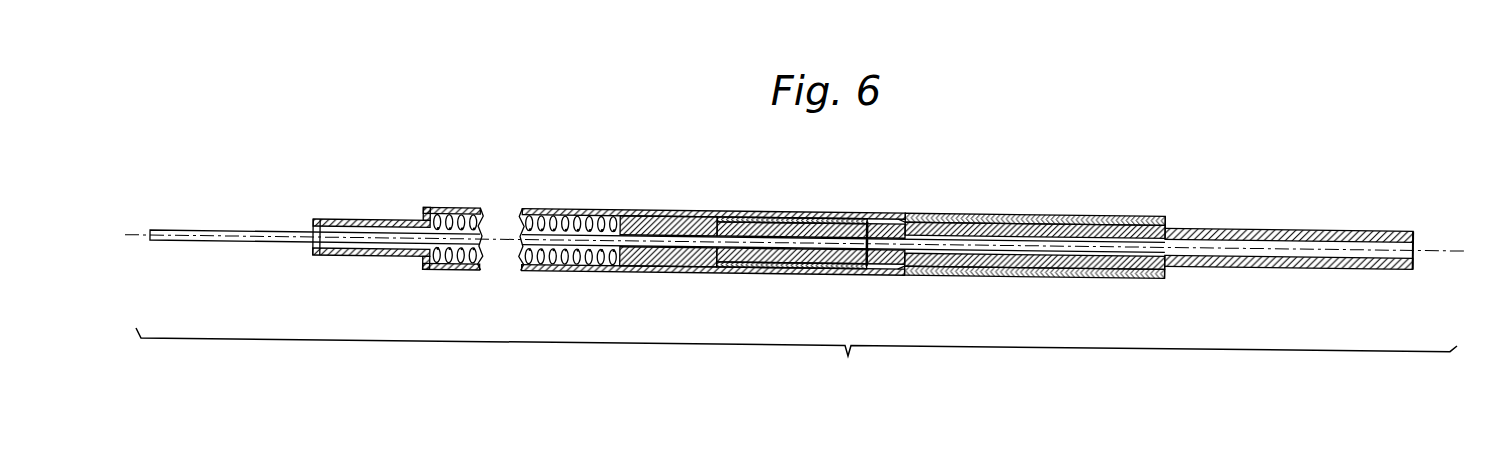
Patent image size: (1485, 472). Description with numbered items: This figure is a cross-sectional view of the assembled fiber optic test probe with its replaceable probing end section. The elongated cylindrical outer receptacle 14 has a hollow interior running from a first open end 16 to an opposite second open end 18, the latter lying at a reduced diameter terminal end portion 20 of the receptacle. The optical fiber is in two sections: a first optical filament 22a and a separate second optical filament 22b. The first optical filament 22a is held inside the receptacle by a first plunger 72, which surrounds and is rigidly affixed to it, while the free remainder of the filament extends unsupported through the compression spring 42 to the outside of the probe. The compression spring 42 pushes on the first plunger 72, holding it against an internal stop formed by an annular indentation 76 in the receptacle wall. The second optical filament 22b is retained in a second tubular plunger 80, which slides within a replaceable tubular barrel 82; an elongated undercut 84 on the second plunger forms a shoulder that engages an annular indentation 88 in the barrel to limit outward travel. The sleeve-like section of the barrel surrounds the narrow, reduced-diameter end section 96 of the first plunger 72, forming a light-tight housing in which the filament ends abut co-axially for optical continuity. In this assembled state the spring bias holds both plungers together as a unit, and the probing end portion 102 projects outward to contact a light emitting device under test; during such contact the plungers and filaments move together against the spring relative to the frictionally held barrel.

The outer receptacle 14 is at (560, 266).
The first open end 16 is at (1168, 206).
The second open end 18 is at (312, 218).
The reduced diameter terminal end portion 20 is at (383, 217).
The first optical filament 22a is at (255, 241).
The second optical filament 22b is at (1290, 216).
The compression spring 42 is at (523, 205).
The first plunger 72 is at (665, 255).
The annular indentation 76 is at (724, 259).
The second tubular plunger 80 is at (1107, 266).
The replaceable tubular barrel 82 is at (1027, 258).
The elongated undercut 84 is at (1000, 212).
The annular indentation 88 is at (921, 259).
The reduced-diameter end section 96 is at (802, 211).
The probing end portion 102 is at (1303, 254).